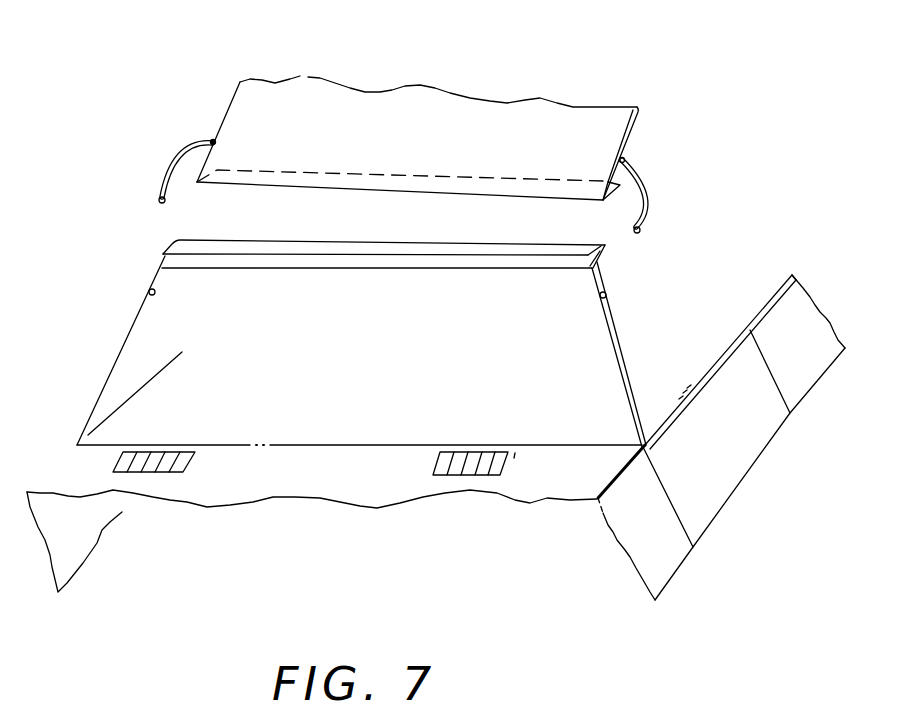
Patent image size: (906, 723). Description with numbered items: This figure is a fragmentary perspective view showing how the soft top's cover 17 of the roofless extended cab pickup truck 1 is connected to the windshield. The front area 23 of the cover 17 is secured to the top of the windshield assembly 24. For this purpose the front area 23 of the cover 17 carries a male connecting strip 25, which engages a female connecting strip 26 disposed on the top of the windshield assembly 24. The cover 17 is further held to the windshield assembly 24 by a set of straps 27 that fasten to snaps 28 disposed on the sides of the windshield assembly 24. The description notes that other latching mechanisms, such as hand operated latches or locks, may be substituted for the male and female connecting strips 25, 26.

The roofless extended cab pickup truck 1 is at (563, 474).
The cover 17 is at (388, 118).
The front area of the cover 23 is at (607, 127).
The windshield assembly 24 is at (580, 367).
The male connecting strip 25 is at (293, 180).
The female connecting strip 26 is at (610, 258).
The straps 27 is at (167, 172).
The snaps 28 is at (150, 292).